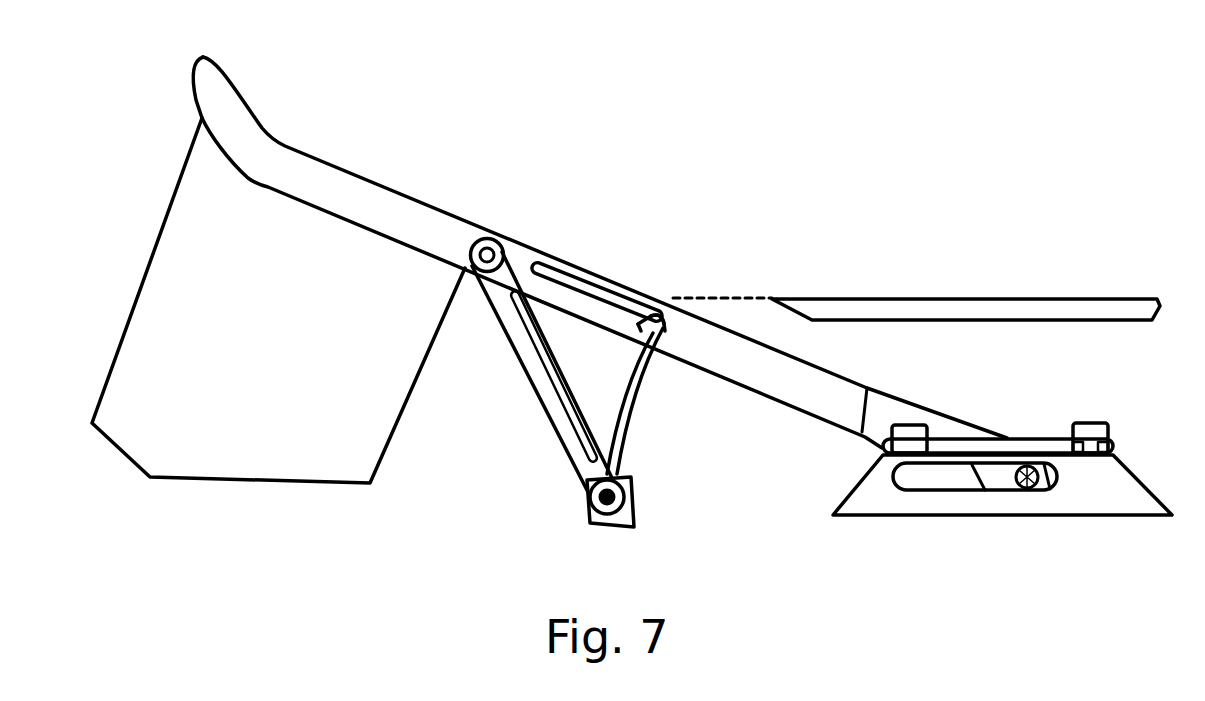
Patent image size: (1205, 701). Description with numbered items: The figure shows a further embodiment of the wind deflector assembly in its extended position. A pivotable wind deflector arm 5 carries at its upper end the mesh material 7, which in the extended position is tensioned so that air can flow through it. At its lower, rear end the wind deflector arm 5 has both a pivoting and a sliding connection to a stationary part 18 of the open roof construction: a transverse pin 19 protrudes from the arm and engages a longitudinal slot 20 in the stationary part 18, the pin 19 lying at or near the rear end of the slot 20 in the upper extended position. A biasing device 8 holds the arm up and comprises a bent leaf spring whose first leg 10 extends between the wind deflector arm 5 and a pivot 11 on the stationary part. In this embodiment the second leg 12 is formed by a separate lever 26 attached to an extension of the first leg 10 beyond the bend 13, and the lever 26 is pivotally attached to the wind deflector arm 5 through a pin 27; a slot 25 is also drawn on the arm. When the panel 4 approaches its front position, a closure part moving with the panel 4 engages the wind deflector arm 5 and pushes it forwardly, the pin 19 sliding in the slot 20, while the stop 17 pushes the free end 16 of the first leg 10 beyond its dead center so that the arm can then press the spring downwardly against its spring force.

The panel 4 is at (962, 313).
The wind deflector arm 5 is at (362, 197).
The mesh material 7 is at (210, 450).
The biasing device 8 is at (659, 545).
The first leg 10 is at (645, 375).
The pivot 11 is at (585, 521).
The second leg 12 is at (530, 377).
The bend 13 is at (625, 522).
The free end 16 is at (657, 300).
The stop 17 is at (667, 337).
The stationary part 18 is at (1093, 500).
The transverse pin 19 is at (1027, 485).
The longitudinal slot 20 is at (920, 477).
The guide slot 25 is at (578, 288).
The lever 26 is at (548, 395).
The pin 27 is at (520, 243).